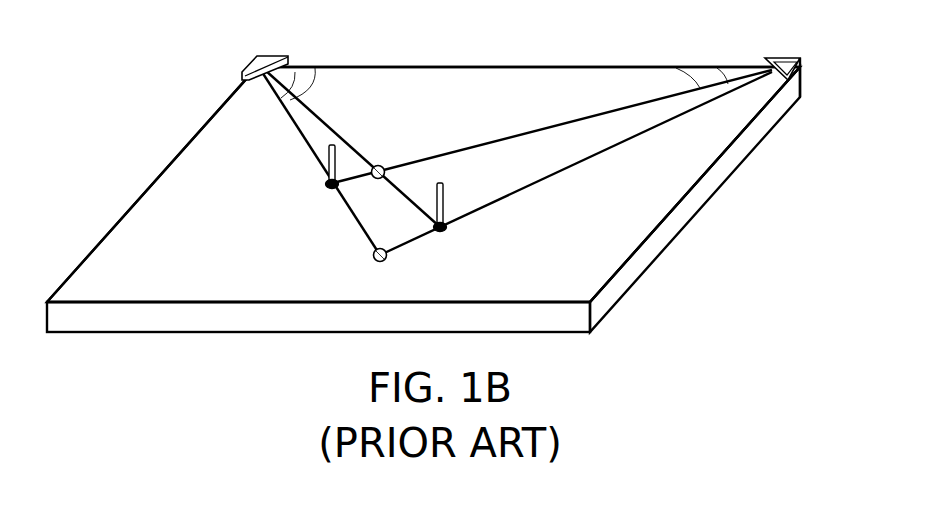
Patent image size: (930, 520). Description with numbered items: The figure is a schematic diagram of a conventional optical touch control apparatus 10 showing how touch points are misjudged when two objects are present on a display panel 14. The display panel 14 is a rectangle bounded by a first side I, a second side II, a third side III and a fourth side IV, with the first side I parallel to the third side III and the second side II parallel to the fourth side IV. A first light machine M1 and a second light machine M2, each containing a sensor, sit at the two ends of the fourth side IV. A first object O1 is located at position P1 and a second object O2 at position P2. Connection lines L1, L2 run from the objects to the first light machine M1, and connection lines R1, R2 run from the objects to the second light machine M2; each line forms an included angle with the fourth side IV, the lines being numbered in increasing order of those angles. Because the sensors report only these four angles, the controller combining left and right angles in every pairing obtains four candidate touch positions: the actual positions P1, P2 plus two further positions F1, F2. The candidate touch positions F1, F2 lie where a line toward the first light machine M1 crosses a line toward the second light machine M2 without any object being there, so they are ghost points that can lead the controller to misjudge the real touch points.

The optical touch system 10 is at (158, 59).
The display panel 14 is at (623, 238).
The first side I is at (152, 184).
The second side II is at (318, 331).
The third side III is at (695, 184).
The fourth side IV is at (528, 57).
The first light machine M1 is at (264, 55).
The second light machine M2 is at (789, 63).
The connection line L1 is at (338, 135).
The connection line L2 is at (306, 142).
The connection line R1 is at (533, 131).
The connection line R2 is at (510, 194).
The first object O1 is at (338, 146).
The second object O2 is at (443, 184).
The candidate touch position P1 is at (330, 188).
The candidate touch position P2 is at (456, 233).
The candidate touch position F1 is at (373, 184).
The candidate touch position F2 is at (378, 268).